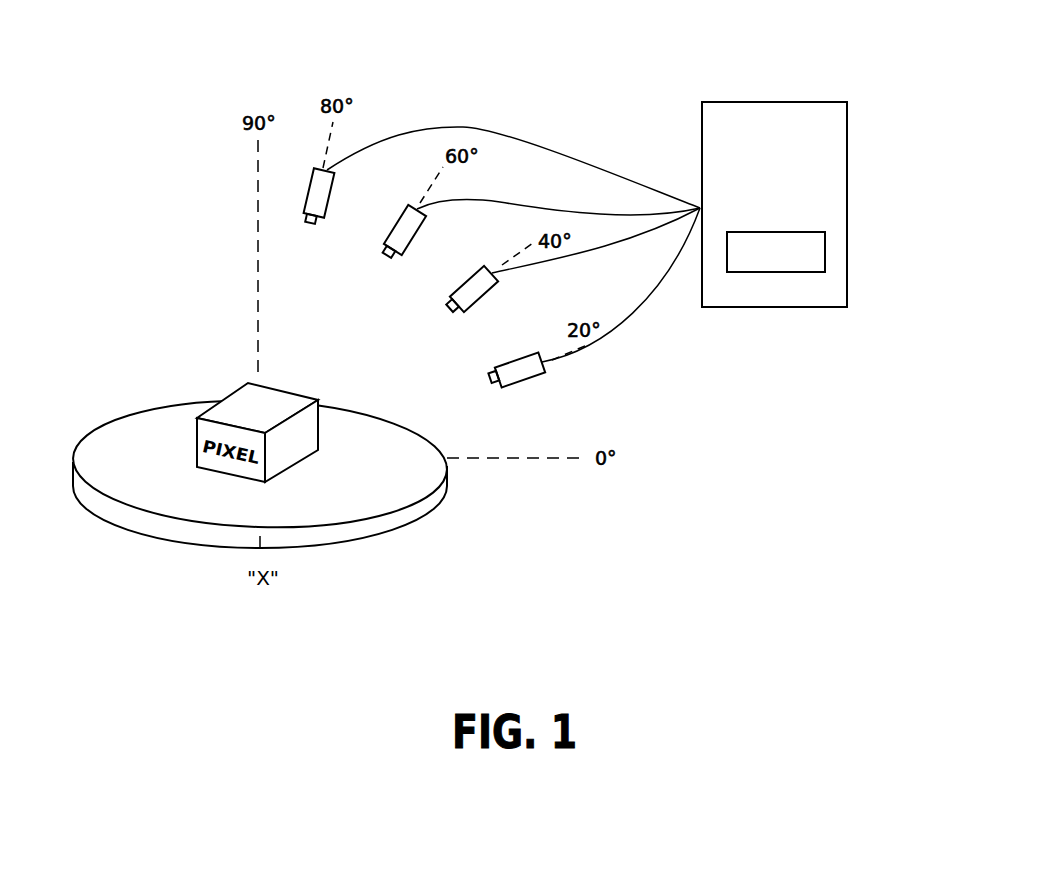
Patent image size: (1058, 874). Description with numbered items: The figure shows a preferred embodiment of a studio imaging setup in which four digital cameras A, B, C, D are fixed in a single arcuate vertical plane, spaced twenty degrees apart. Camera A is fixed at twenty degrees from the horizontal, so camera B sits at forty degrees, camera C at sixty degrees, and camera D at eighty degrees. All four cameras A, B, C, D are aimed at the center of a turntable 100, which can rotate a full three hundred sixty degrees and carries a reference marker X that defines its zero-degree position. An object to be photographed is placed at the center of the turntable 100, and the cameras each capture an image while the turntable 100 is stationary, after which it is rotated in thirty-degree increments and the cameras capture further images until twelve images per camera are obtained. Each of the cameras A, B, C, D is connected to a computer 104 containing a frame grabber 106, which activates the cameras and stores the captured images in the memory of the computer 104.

The turntable 100 is at (408, 478).
The computer 104 is at (770, 110).
The frame grabber 106 is at (772, 263).
The camera A is at (525, 380).
The camera B is at (480, 300).
The camera C is at (408, 243).
The camera D is at (333, 192).